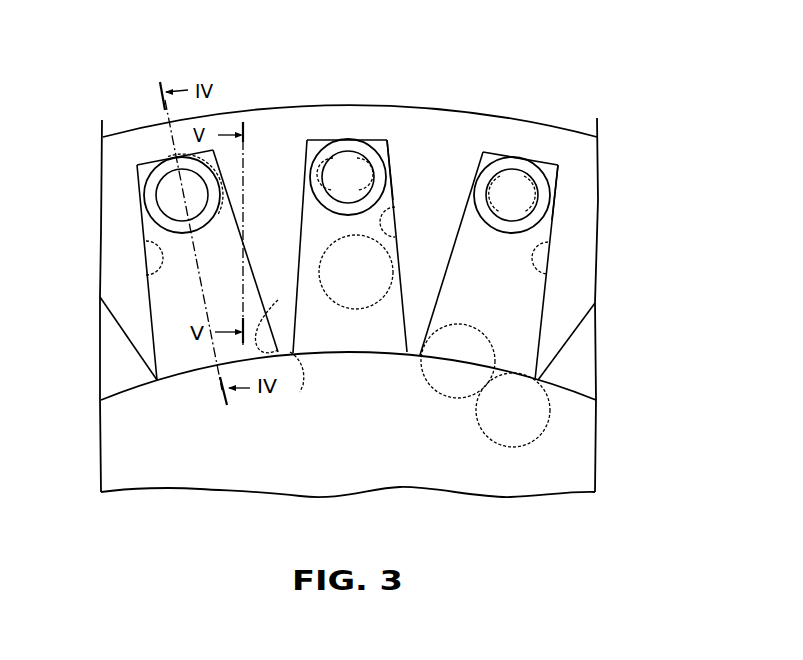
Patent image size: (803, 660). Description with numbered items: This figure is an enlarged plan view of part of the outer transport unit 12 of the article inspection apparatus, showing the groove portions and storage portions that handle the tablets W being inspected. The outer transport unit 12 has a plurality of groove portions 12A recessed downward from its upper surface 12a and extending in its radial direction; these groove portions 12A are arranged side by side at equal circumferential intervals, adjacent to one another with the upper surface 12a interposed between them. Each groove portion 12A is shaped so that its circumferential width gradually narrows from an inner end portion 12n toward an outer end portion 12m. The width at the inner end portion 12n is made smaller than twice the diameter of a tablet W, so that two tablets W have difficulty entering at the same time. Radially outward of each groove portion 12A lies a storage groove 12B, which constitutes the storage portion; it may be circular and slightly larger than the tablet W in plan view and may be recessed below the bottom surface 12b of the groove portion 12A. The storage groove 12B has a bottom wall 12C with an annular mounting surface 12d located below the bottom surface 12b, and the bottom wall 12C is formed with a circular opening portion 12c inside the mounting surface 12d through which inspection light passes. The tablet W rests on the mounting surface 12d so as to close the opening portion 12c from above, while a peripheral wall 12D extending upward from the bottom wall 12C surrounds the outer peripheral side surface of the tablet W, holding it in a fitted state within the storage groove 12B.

The outer transport unit 12 is at (416, 104).
The upper surface 12a is at (118, 202).
The groove portion 12A is at (312, 230).
The bottom surface 12b is at (193, 357).
The storage groove 12B is at (146, 170).
The opening portion 12c is at (367, 158).
The bottom wall 12C is at (326, 157).
The mounting surface 12d is at (383, 168).
The peripheral wall 12D is at (307, 183).
The outer end portion 12m is at (157, 277).
The inner end portion 12n is at (264, 296).
The tablet W is at (205, 222).